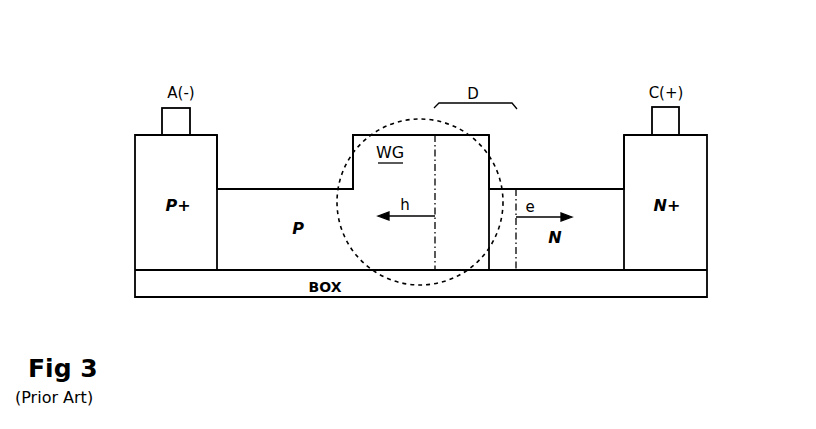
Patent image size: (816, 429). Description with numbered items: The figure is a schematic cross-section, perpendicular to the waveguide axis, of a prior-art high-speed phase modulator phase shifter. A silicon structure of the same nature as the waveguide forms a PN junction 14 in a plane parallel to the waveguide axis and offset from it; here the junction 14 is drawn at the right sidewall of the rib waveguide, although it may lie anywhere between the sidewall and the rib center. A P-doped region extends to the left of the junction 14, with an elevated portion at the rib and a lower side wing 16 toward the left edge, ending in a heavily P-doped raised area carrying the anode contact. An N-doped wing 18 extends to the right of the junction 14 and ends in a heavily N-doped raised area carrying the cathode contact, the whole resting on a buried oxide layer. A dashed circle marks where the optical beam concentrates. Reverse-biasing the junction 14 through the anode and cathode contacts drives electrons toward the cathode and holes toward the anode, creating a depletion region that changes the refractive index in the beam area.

The PN junction 14 is at (489, 233).
The lower side wing 16 is at (272, 139).
The N-doped wing 18 is at (558, 148).